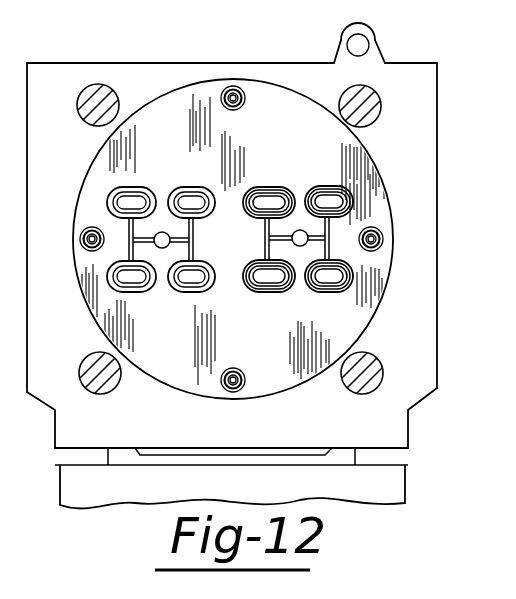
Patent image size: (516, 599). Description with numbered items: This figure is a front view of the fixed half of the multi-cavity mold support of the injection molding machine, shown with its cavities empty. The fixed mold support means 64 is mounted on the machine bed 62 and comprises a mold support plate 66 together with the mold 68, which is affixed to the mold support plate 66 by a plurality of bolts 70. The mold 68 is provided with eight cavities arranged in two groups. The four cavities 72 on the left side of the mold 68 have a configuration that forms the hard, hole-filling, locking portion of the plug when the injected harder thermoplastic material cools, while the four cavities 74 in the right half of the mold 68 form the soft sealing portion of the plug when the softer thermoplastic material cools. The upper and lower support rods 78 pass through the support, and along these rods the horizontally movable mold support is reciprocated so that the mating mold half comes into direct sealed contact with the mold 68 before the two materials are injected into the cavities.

The machine bed 62 is at (337, 458).
The fixed mold support means 64 is at (237, 60).
The mold support plate 66 is at (304, 78).
The mold 68 is at (298, 110).
The bolts 70 is at (383, 243).
The cavities 72 is at (176, 188).
The cavities 74 is at (316, 186).
The support rods 78 is at (78, 107).